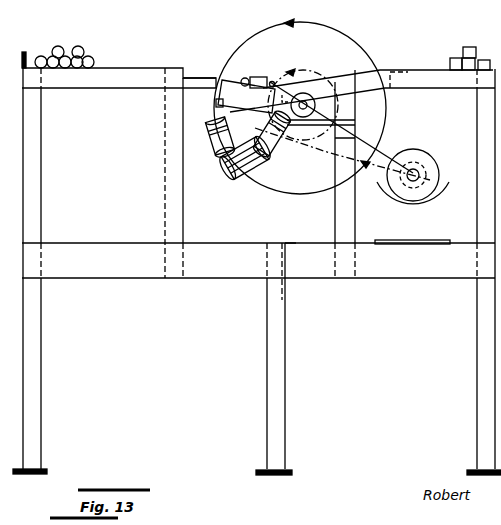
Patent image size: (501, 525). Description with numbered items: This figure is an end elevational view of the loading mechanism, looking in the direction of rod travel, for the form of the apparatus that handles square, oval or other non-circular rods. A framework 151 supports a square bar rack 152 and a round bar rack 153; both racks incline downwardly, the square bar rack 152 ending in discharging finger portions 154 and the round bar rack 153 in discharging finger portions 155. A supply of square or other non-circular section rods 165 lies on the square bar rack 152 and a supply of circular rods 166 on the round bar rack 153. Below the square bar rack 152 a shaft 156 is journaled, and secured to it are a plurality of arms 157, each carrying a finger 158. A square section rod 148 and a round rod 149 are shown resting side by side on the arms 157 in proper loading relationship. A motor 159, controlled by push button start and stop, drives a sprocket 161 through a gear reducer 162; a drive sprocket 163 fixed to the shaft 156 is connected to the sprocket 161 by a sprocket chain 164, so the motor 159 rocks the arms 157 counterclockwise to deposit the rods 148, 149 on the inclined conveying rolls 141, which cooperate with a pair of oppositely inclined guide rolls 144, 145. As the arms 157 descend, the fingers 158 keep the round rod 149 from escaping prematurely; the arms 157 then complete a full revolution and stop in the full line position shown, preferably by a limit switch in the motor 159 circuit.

The rolls 141 is at (238, 180).
The guide roll 144 is at (218, 150).
The guide roll 145 is at (277, 146).
The square section rod 148 is at (258, 76).
The round rod 149 is at (244, 77).
The framework 151 is at (251, 268).
The square bar rack 152 is at (458, 80).
The round bar rack 153 is at (93, 78).
The discharging finger portions 154 is at (272, 83).
The discharging finger portions 155 is at (225, 80).
The shaft 156 is at (313, 96).
The arms 157 is at (218, 103).
The finger 158 is at (254, 96).
The motor 159 is at (421, 233).
The sprocket 161 is at (431, 156).
The gear reducer 162 is at (431, 179).
The drive sprocket 163 is at (300, 106).
The sprocket chain 164 is at (376, 119).
The square or other non-circular section rods 165 is at (483, 32).
The circular rods 166 is at (64, 44).